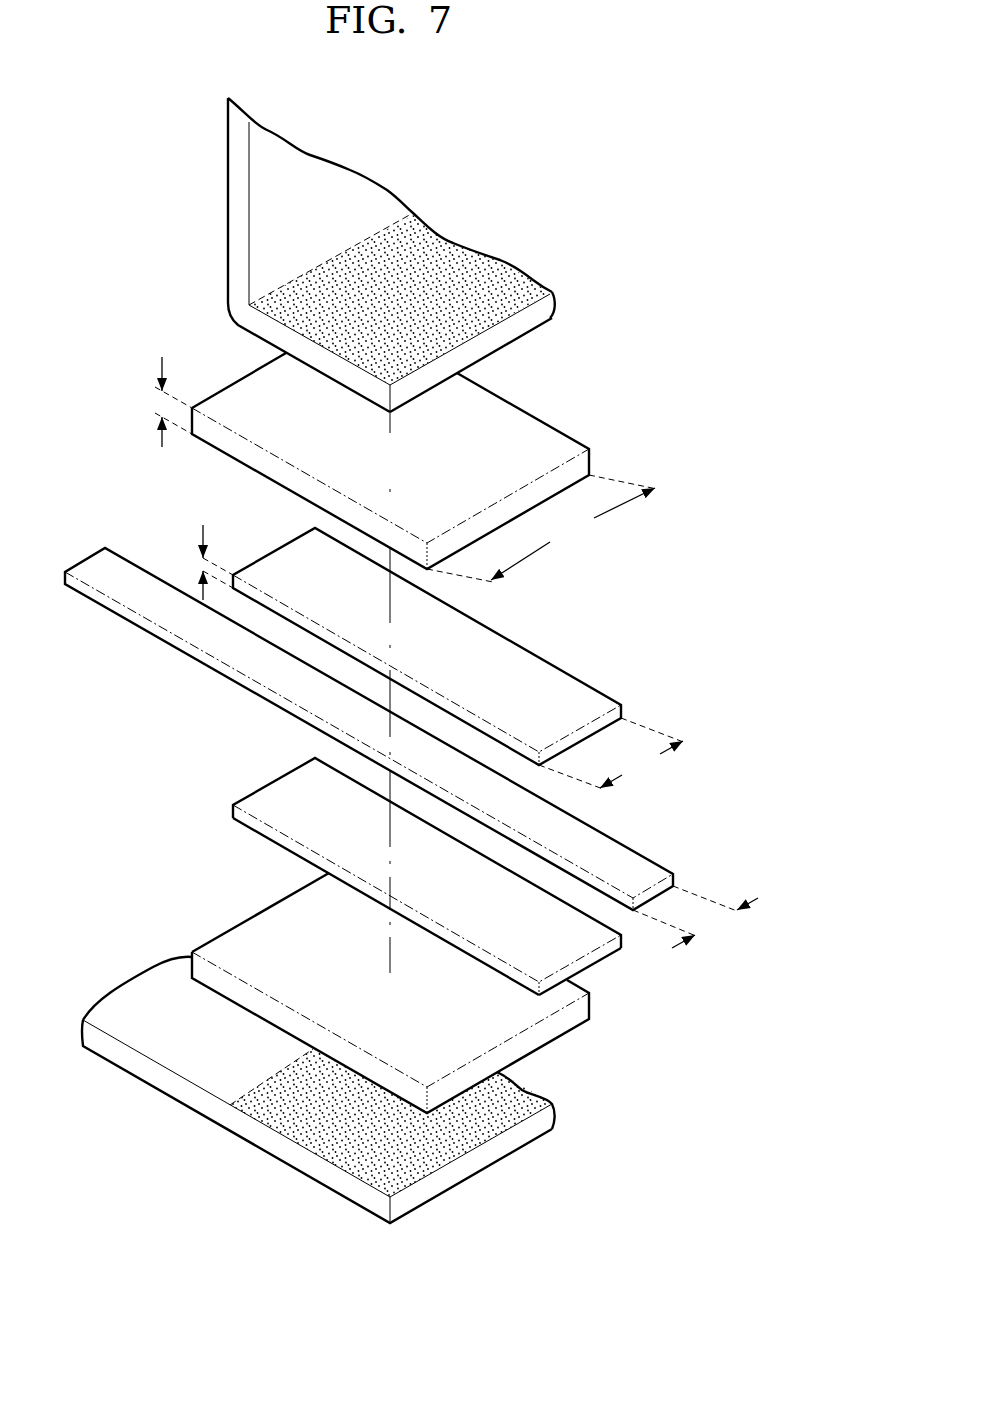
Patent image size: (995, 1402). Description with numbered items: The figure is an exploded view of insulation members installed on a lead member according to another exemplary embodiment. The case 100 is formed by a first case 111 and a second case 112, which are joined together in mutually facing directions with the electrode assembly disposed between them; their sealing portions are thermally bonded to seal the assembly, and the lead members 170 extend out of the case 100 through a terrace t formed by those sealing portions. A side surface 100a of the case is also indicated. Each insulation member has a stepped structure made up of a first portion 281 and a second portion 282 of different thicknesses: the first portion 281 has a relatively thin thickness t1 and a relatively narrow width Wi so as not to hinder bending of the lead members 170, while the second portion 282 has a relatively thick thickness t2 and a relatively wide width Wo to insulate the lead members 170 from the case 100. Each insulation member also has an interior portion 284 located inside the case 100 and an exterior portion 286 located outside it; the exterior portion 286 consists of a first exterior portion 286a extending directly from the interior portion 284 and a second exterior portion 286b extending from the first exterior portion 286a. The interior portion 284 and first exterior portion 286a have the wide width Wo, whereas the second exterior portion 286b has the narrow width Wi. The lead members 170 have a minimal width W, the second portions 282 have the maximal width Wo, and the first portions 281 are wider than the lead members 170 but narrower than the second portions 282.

The case 100 is at (632, 156).
The side surface of electrode plate 100a is at (515, 323).
The first case 111 is at (238, 225).
The second case 112 is at (175, 1085).
The lead members 170 is at (638, 862).
The first portion 281 is at (560, 680).
The second portion 282 is at (537, 428).
The interior portion 284 is at (252, 925).
The exterior portion 286 is at (612, 1225).
The first exterior portion 286a is at (490, 962).
The second exterior portion 286b is at (575, 972).
The terrace t is at (457, 270).
The thin thickness t1 is at (203, 562).
The thick thickness t2 is at (162, 402).
The minimal width W is at (695, 917).
The narrow width Wi is at (612, 753).
The wide width Wo is at (542, 528).